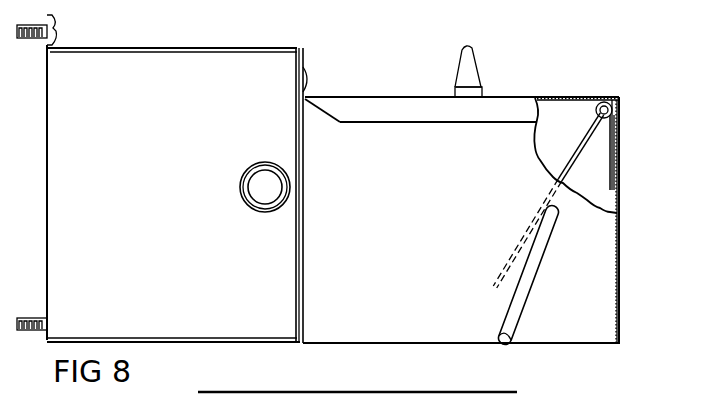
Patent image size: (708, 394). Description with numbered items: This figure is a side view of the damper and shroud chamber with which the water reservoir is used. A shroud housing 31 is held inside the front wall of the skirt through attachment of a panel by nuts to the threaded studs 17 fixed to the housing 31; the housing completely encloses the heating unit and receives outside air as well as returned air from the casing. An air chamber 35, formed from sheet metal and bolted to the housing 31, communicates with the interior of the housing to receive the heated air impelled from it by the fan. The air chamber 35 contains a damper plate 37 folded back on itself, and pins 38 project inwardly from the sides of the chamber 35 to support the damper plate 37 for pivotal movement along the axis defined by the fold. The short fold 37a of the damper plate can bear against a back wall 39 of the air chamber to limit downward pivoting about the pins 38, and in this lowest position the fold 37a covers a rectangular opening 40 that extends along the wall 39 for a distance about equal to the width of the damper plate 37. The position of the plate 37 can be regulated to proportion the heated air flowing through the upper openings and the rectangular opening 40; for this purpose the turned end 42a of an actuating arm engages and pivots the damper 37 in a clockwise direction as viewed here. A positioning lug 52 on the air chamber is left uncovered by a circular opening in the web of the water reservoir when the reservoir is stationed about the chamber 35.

The shroud housing 31 is at (93, 77).
The threaded studs 17 is at (30, 318).
The air chamber 35 is at (350, 160).
The positioning lug 52 is at (476, 76).
The pins 38 is at (616, 114).
The damper plate 37 is at (573, 162).
The short fold 37a is at (614, 150).
The rectangular opening 40 is at (620, 168).
The back wall 39 is at (617, 213).
The end of actuating arm 42a is at (523, 292).